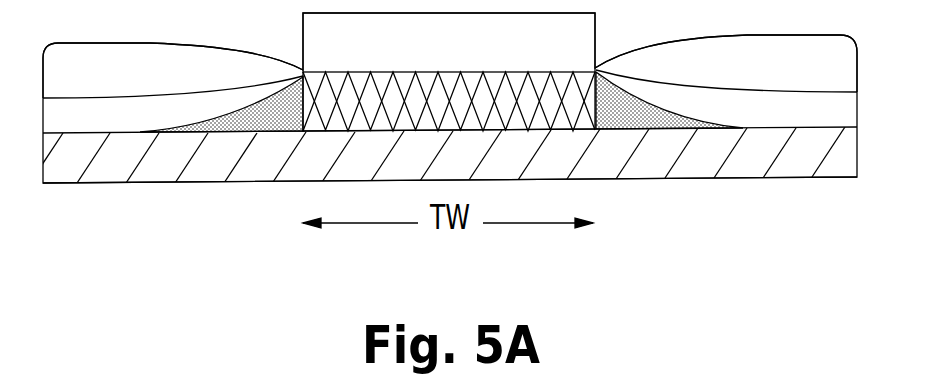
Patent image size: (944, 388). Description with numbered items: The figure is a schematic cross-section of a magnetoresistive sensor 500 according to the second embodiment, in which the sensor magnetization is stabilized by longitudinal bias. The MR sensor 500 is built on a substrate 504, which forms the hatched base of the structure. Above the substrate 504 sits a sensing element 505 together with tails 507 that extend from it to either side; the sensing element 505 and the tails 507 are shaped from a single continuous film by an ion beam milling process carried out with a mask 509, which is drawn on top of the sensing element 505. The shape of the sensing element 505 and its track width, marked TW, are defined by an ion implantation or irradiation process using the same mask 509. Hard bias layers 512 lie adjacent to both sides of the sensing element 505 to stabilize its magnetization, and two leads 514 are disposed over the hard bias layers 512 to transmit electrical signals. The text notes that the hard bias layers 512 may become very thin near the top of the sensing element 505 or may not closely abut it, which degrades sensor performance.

The MR sensor 500 is at (724, 202).
The substrate 504 is at (442, 156).
The sensing element 505 is at (449, 101).
The tails 507 is at (441, 105).
The mask 509 is at (449, 42).
The hard bias layers 512 is at (450, 104).
The leads 514 is at (450, 66).